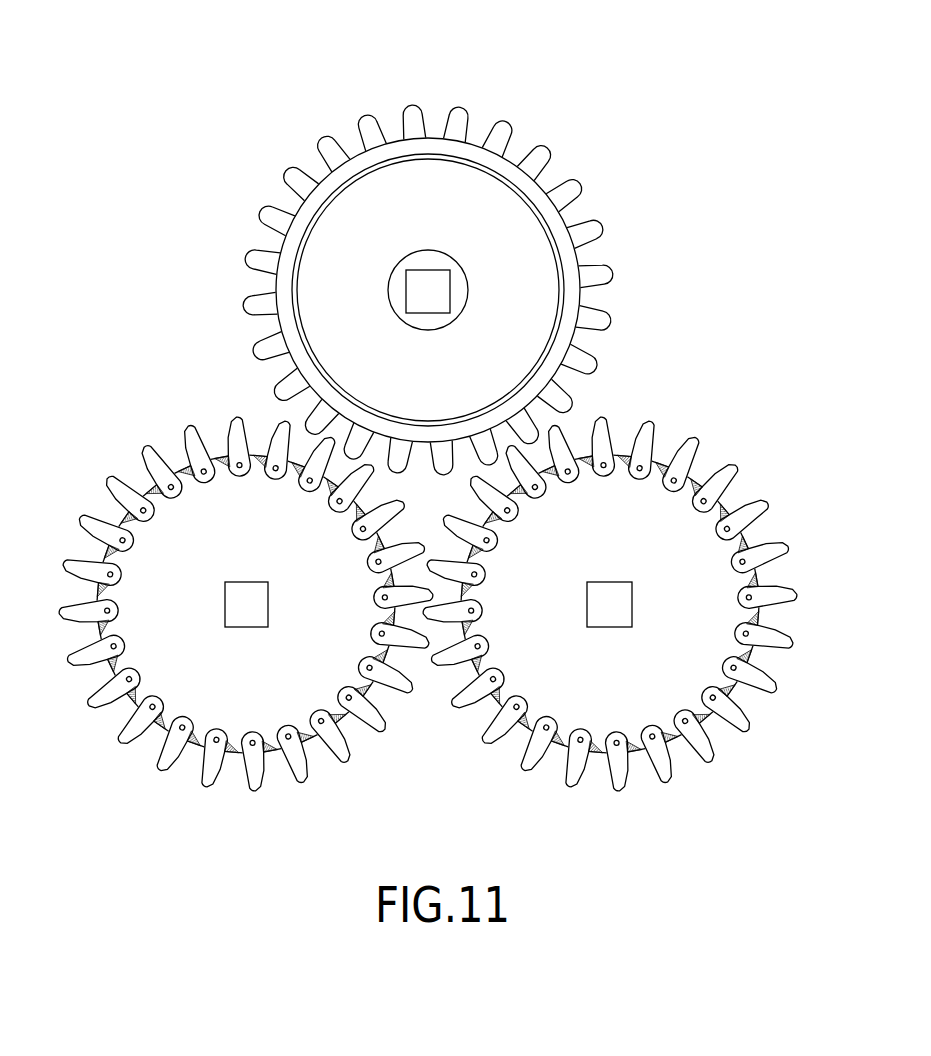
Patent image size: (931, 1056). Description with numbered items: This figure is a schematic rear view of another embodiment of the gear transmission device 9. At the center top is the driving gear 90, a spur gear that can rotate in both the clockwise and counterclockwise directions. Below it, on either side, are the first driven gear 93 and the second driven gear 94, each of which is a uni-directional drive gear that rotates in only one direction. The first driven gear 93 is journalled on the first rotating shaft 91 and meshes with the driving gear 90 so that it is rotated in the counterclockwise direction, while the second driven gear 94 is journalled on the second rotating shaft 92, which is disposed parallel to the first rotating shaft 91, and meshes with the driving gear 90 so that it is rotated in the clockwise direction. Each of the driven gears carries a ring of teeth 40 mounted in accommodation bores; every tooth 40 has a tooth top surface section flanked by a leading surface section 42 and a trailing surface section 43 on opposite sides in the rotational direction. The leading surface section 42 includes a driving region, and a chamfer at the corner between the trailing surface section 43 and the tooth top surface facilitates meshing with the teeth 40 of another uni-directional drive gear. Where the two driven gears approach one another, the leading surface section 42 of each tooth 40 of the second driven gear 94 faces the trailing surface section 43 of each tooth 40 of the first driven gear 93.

The gear transmission device 9 is at (470, 255).
The driving gear 90 is at (470, 290).
The first rotating shaft 91 is at (610, 612).
The second rotating shaft 92 is at (250, 612).
The first driven gear 93 is at (617, 640).
The second driven gear 94 is at (238, 637).
The tooth 40 is at (402, 603).
The leading surface section 42 is at (417, 606).
The trailing surface section 43 is at (438, 603).